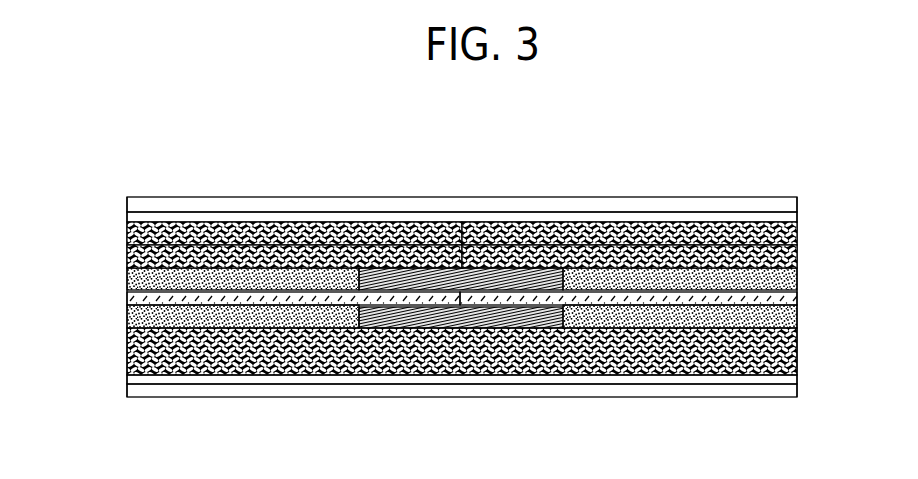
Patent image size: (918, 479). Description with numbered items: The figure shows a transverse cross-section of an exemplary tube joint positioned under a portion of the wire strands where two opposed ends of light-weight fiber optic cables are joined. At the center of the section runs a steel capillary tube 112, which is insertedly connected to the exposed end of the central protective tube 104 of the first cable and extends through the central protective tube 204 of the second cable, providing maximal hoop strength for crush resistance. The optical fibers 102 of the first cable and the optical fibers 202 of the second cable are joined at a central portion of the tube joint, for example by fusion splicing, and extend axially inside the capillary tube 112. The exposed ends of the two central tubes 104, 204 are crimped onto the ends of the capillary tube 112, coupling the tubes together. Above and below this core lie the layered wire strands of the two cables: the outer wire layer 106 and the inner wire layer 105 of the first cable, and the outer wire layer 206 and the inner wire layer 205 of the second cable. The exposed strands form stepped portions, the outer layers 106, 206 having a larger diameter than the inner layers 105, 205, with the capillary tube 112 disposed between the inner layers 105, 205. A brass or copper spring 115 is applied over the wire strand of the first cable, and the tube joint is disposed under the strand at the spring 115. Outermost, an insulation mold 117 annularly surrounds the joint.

The insulation mold 117 is at (193, 202).
The spring 115 is at (271, 222).
The outer wire layer 106 is at (127, 239).
The inner wire layer 105 is at (127, 262).
The optical fibers 102 is at (127, 303).
The central tube 104 is at (127, 322).
The capillary tube 112 is at (412, 288).
The outer wire layer 206 is at (797, 237).
The inner wire layer 205 is at (797, 262).
The optical fibers 202 is at (797, 293).
The central tube 204 is at (797, 320).